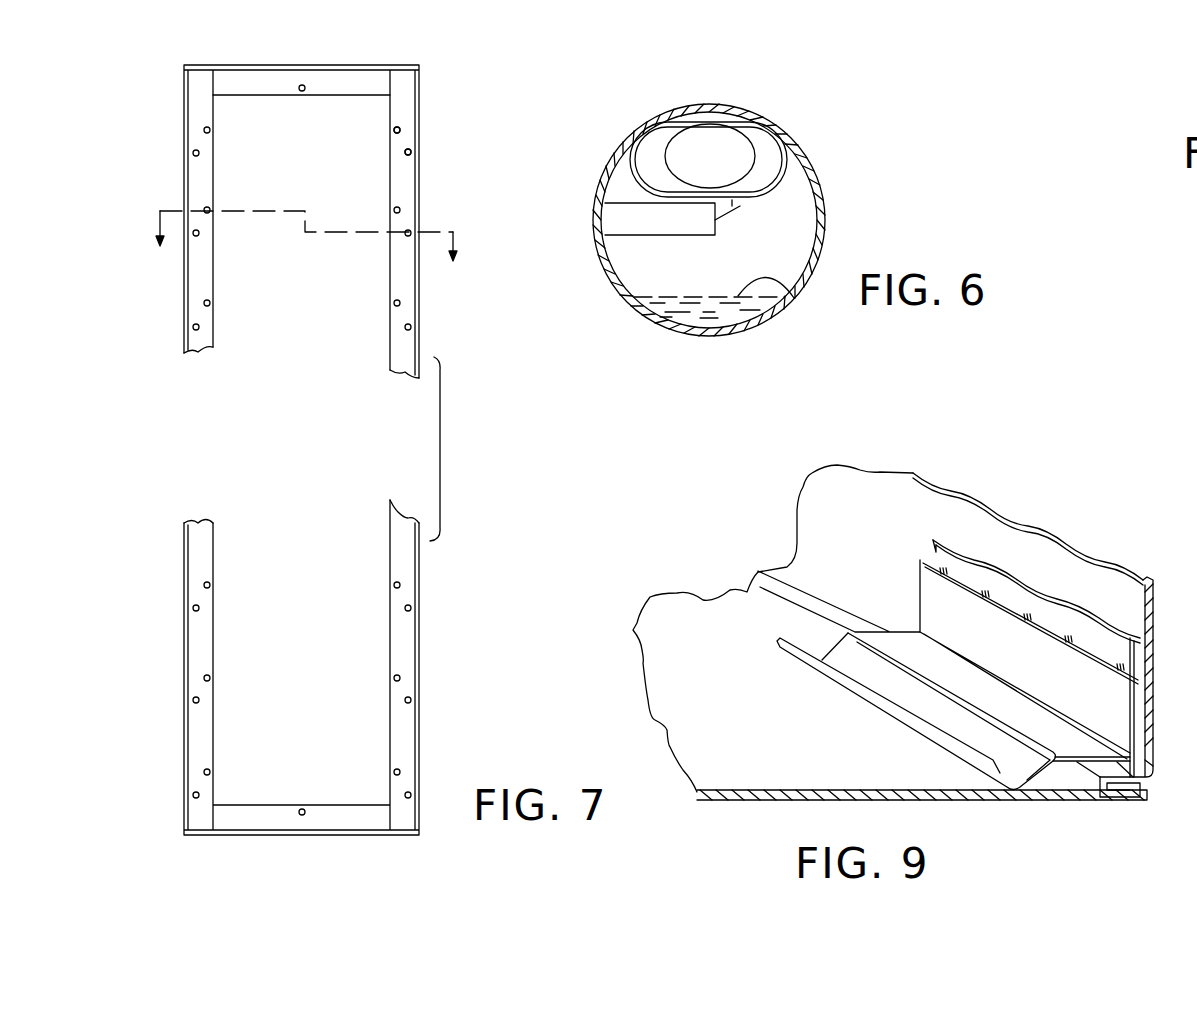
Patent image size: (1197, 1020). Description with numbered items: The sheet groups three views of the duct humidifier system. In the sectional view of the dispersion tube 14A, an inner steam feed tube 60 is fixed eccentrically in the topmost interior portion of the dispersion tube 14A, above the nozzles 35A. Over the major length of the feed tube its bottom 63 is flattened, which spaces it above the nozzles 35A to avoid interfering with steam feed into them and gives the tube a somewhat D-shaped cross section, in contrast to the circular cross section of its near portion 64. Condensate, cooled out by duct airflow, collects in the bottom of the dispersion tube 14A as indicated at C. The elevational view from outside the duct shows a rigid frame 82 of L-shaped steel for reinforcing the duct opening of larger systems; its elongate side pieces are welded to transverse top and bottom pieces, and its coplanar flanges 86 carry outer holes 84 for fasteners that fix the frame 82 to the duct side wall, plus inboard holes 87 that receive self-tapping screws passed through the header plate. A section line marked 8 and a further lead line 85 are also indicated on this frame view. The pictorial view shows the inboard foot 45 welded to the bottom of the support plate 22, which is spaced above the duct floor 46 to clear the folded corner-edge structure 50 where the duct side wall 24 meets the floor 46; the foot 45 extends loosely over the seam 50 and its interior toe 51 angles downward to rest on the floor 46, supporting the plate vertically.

In FIG. 7, the rigid frame 82 is at (423, 170).
In FIG. 7, the holes 84 is at (411, 326).
In FIG. 7, the mounting hole 85 is at (390, 152).
In FIG. 7, the coplanar flanges 86 is at (398, 183).
In FIG. 7, the inboard holes 87 is at (395, 303).
In FIG. 7, the section line 8- 8 is at (308, 249).
In FIG. 6, the dispersion tube 14A is at (827, 224).
In FIG. 6, the inner steam feed tube 60 is at (785, 183).
In FIG. 6, the near portion 64 is at (740, 203).
In FIG. 6, the bottom 63 is at (732, 205).
In FIG. 6, the nozzles 35A is at (653, 227).
In FIG. 6, the condensate C is at (787, 288).
In FIG. 9, the duct side wall 24 is at (868, 487).
In FIG. 9, the support plate 22 is at (933, 550).
In FIG. 9, the foot 45 is at (1007, 603).
In FIG. 9, the duct floor 46 is at (764, 765).
In FIG. 9, the interior toe 51 is at (1043, 767).
In FIG. 9, the folded corner-edge structure 50 is at (1123, 797).